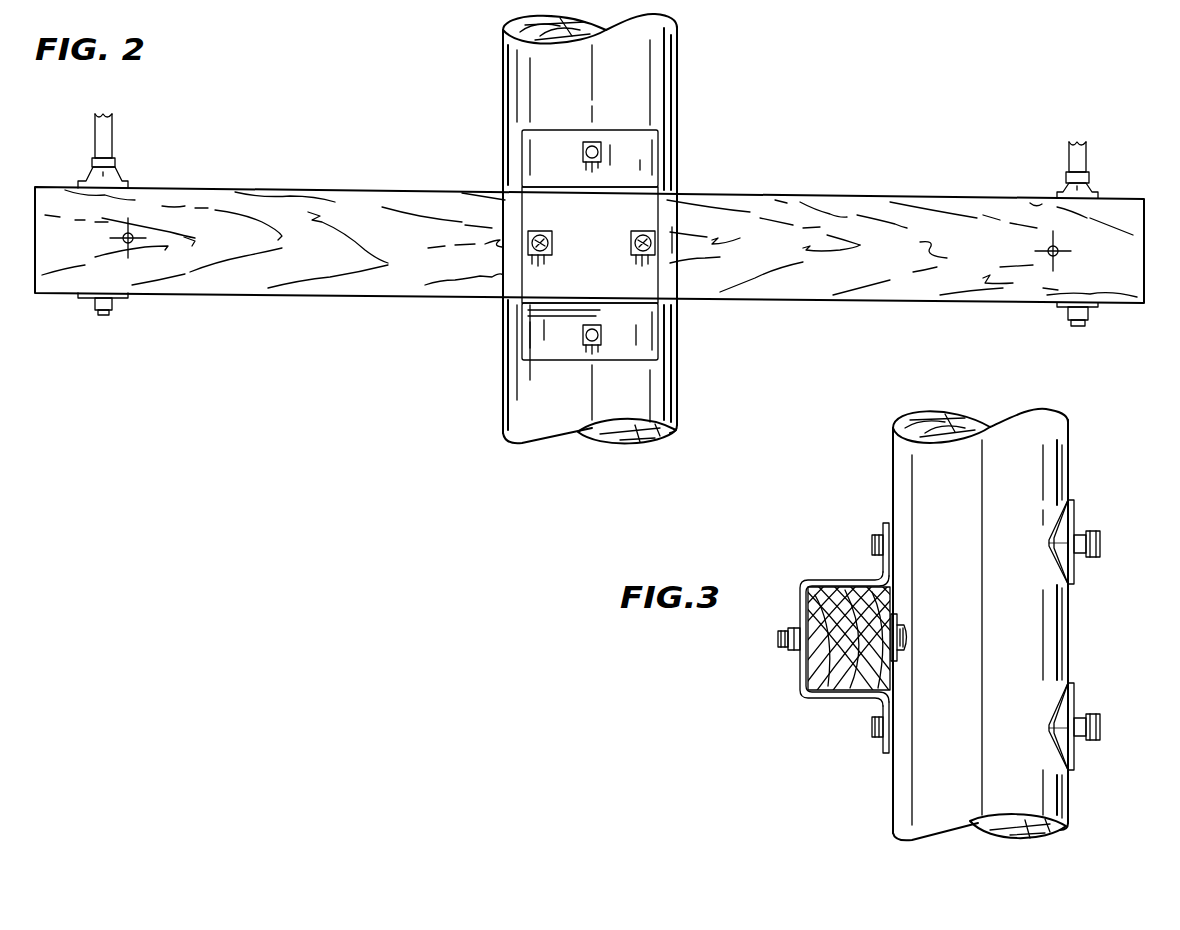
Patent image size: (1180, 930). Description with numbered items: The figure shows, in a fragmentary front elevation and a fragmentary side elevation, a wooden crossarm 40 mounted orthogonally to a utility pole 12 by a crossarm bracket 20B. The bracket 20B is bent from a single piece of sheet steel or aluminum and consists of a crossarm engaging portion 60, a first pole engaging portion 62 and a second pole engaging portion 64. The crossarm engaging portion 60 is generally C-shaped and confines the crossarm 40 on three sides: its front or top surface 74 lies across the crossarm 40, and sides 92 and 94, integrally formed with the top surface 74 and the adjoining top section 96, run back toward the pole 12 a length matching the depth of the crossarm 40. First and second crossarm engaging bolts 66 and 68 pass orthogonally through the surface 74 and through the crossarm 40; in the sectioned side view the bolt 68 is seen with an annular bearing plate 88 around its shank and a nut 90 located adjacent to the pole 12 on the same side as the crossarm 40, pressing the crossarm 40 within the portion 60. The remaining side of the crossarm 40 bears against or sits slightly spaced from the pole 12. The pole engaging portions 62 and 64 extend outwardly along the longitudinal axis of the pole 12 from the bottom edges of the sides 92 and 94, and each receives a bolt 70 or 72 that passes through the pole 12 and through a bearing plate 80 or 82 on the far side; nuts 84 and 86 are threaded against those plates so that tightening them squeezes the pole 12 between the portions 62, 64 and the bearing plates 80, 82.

In FIG. 2, the pole 12 is at (656, 86).
In FIG. 3, the pole 12 is at (1048, 476).
In FIG. 2, the crossarm bracket 20B is at (580, 256).
In FIG. 3, the crossarm bracket 20B is at (853, 638).
In FIG. 2, the wooden crossarm 40 is at (335, 200).
In FIG. 3, the wooden crossarm 40 is at (846, 676).
In FIG. 2, the crossarm engaging portion 60 is at (608, 245).
In FIG. 3, the crossarm engaging portion 60 is at (810, 661).
In FIG. 2, the first pole engaging portion 62 is at (646, 150).
In FIG. 3, the first pole engaging portion 62 is at (886, 562).
In FIG. 2, the second pole engaging portion 64 is at (650, 338).
In FIG. 3, the second pole engaging portion 64 is at (886, 748).
In FIG. 2, the first crossarm engaging bolt 66 is at (543, 232).
In FIG. 2, the second crossarm engaging bolt 68 is at (641, 232).
In FIG. 3, the second crossarm engaging bolt 68 is at (906, 638).
In FIG. 2, the bolt 70 is at (583, 151).
In FIG. 3, the bolt 70 is at (874, 538).
In FIG. 2, the bolt 72 is at (578, 345).
In FIG. 3, the bolt 72 is at (872, 730).
In FIG. 2, the front surface 74 is at (532, 204).
In FIG. 3, the front surface 74 is at (800, 612).
In FIG. 3, the bearing plate 80 is at (1070, 520).
In FIG. 3, the bearing plate 82 is at (1070, 706).
In FIG. 3, the nut 84 is at (1082, 556).
In FIG. 3, the nut 86 is at (1082, 740).
In FIG. 3, the annular bearing plate 88 is at (906, 628).
In FIG. 3, the nut 90 is at (792, 650).
In FIG. 3, the side 92 is at (822, 582).
In FIG. 3, the side 94 is at (822, 694).
In FIG. 3, the top section 96 is at (802, 674).